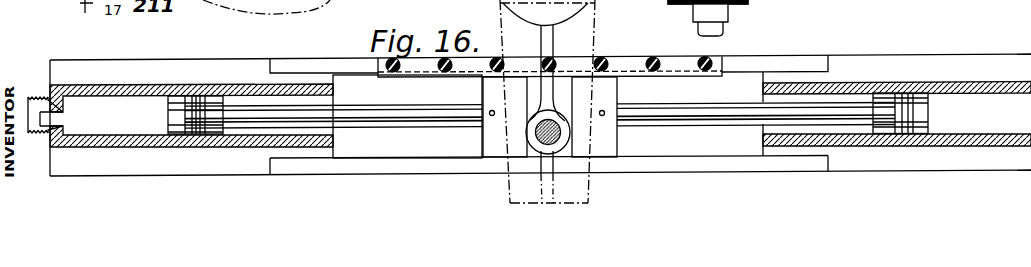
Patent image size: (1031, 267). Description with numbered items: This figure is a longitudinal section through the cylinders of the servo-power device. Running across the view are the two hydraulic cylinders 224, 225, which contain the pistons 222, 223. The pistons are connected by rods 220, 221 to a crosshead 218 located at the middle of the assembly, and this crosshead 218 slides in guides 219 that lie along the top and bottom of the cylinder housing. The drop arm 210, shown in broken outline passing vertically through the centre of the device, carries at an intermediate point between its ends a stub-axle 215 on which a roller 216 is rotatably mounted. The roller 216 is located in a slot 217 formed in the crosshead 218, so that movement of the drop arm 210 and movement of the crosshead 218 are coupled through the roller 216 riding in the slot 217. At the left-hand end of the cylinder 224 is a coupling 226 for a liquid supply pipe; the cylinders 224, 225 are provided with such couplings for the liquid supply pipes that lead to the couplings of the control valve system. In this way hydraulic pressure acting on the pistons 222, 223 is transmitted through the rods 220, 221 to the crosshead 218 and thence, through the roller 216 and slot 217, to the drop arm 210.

The drop arm 210 is at (600, 28).
The stub-axle 215 is at (546, 143).
The roller 216 is at (527, 133).
The slot 217 is at (565, 103).
The crosshead 218 is at (490, 100).
The guides 219 is at (415, 167).
The rod 220 is at (378, 124).
The rod 221 is at (707, 115).
The piston 222 is at (180, 114).
The piston 223 is at (920, 118).
The hydraulic cylinder 224 is at (113, 86).
The hydraulic cylinder 225 is at (987, 87).
The coupling 226 is at (33, 96).